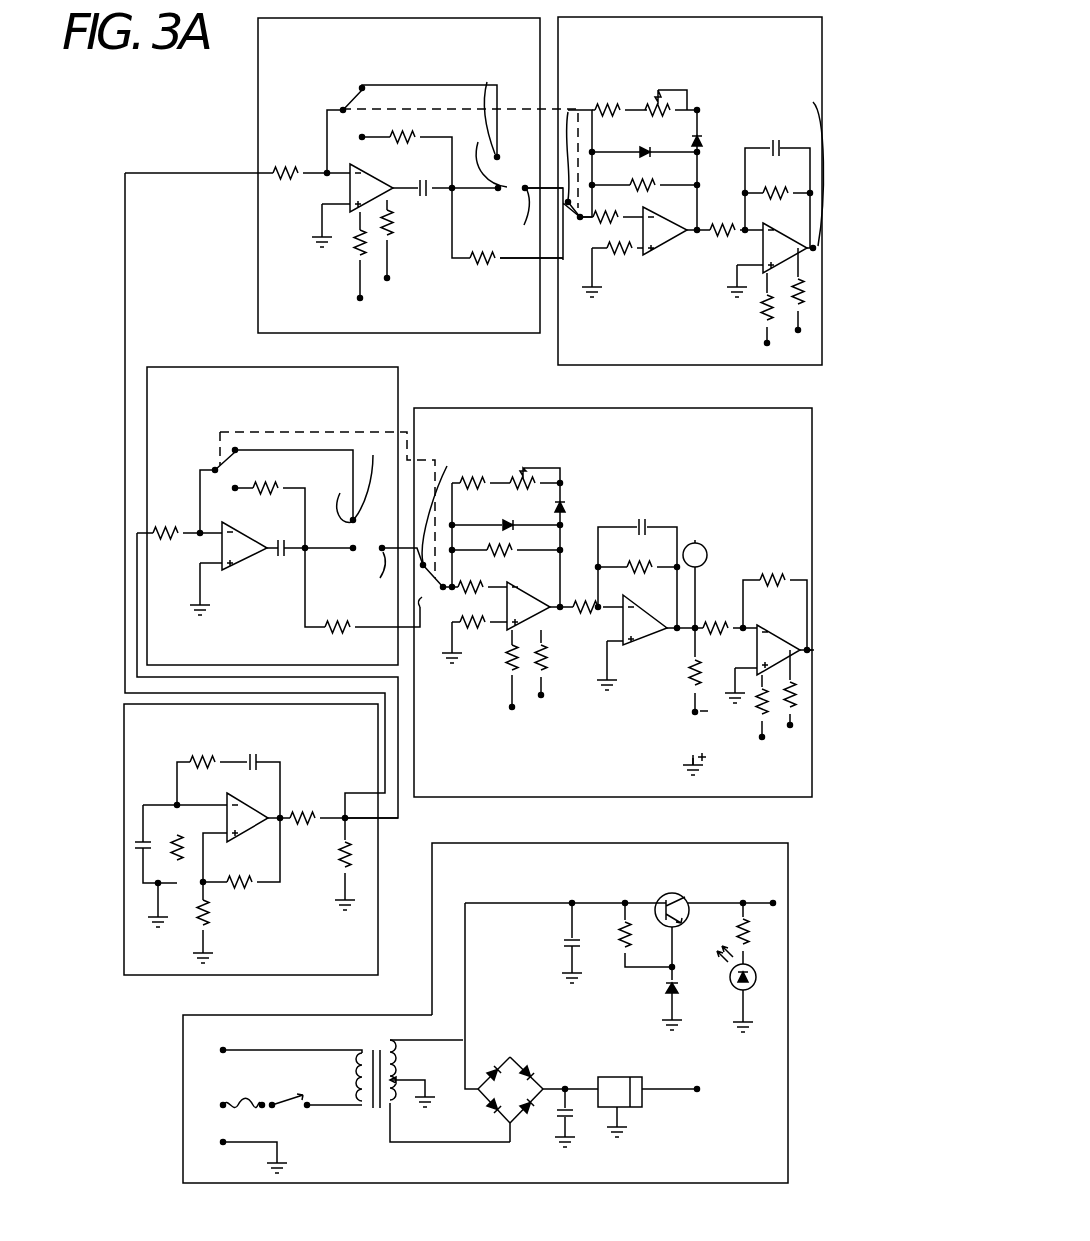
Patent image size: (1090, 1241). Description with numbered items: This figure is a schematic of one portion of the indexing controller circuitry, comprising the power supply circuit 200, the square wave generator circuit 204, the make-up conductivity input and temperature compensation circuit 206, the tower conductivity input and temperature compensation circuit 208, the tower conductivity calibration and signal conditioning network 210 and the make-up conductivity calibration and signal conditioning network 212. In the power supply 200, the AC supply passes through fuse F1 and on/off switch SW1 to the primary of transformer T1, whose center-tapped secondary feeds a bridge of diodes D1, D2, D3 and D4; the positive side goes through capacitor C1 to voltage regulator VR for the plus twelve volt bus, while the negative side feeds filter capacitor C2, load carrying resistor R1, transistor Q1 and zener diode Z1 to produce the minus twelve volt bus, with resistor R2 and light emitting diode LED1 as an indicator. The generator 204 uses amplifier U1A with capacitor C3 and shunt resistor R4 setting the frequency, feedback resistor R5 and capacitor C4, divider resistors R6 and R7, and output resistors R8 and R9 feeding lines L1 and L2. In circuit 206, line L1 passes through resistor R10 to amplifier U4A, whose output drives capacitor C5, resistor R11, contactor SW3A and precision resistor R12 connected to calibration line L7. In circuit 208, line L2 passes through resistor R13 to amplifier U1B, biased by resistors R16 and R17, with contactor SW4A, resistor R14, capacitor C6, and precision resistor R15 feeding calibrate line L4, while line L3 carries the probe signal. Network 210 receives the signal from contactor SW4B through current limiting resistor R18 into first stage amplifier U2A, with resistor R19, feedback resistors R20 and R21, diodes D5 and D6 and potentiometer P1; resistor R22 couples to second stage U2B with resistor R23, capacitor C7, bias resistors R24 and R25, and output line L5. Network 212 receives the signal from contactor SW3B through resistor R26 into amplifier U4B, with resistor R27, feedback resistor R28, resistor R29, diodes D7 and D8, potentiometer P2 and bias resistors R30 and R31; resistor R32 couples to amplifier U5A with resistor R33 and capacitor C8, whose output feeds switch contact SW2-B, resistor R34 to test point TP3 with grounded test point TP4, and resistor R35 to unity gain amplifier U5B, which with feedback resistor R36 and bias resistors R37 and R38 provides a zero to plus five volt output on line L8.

The power supply circuit 200 is at (761, 871).
The square wave generator circuit 204 is at (327, 965).
The make-up conductivity input and temperature compensation circuit 206 is at (257, 660).
The tower conductivity input and temperature compensation circuit 208 is at (493, 331).
The tower conductivity calibration and signal conditioning network 210 is at (677, 354).
The make-up conductivity calibration and signal conditioning network 212 is at (559, 778).
The output line L1 is at (382, 838).
The output line L2 is at (352, 794).
The output line L3 is at (556, 183).
The calibrate input line L4 is at (552, 273).
The output line L5 is at (807, 164).
The calibration input line L7 is at (398, 634).
The output line L8 is at (812, 636).
The load carrying resistor R1 is at (618, 946).
The resistor R2 is at (748, 942).
The resistor R4 is at (169, 840).
The resistor R5 is at (217, 758).
The resistor R6 is at (258, 876).
The resistor R7 is at (204, 932).
The resistor R8 is at (320, 814).
The resistor R9 is at (340, 855).
The resistor R10 is at (183, 520).
The resistor R11 is at (283, 484).
The precision (calibration) resistor R12 is at (332, 617).
The resistor R13 is at (292, 172).
The resistor R14 is at (421, 151).
The precision resistor R15 is at (478, 264).
The bias resistor R16 is at (354, 254).
The bias resistor R17 is at (392, 226).
The current limiting resistor R18 is at (612, 214).
The resistor R19 is at (610, 256).
The feedback resistor R20 is at (645, 185).
The feedback resistor R21 is at (616, 118).
The resistor R22 is at (720, 238).
The feedback resistor R23 is at (781, 180).
The bias resistor R24 is at (766, 306).
The bias resistor R25 is at (786, 302).
The resistor R26 is at (483, 556).
The resistor R27 is at (476, 592).
The feedback resistor R28 is at (505, 553).
The resistor R29 is at (473, 496).
The bias resistor R30 is at (506, 664).
The bias resistor R31 is at (542, 655).
The resistor R32 is at (592, 608).
The resistor R33 is at (634, 569).
The resistor R34 is at (690, 688).
The resistor R35 is at (722, 628).
The feedback resistor R36 is at (780, 580).
The resistor R37 is at (760, 710).
The resistor R38 is at (784, 690).
The capacitor C1 is at (576, 1118).
The filter capacitor C2 is at (564, 940).
The capacitor C3 is at (136, 838).
The capacitor C4 is at (266, 758).
The capacitor C5 is at (280, 562).
The capacitor C6 is at (418, 200).
The capacitor C7 is at (769, 142).
The capacitor C8 is at (638, 524).
The diode D1 is at (492, 1068).
The diode D2 is at (532, 1068).
The diode D3 is at (531, 1113).
The diode D4 is at (486, 1112).
The diode D5 is at (642, 149).
The diode D6 is at (701, 132).
The diode D7 is at (494, 521).
The diode D8 is at (562, 510).
The operational amplifier U1A is at (247, 817).
The inverting unity gain amplifier U1B is at (371, 188).
The first stage operational amplifier U2A is at (665, 231).
The second stage operational amplifier U2B is at (785, 248).
The unity gain operational amplifier U4A is at (244, 546).
The operational amplifier U4B is at (528, 606).
The operational amplifier U5A is at (645, 620).
The unity gain operational amplifier U5B is at (778, 650).
The tower cal/adjust potentiometer P1 is at (688, 93).
The make-up calibrate/adjust potentiometer P2 is at (536, 478).
The on/off switch SW1 is at (274, 1106).
The switch contact SW2-B is at (697, 543).
The moveable contactor SW3A is at (244, 450).
The movable contactor SW3B is at (432, 675).
The movable contactor SW4A is at (362, 150).
The movable contactor SW4B is at (588, 305).
The test point connector TP3 is at (691, 712).
The test point TP4 is at (690, 762).
The transistor Q1 is at (686, 898).
The zener diode Z1 is at (664, 989).
The light emitting diode LED1 is at (756, 988).
The transformer T1 is at (384, 1052).
The fuse F1 is at (242, 1108).
The integrated circuit voltage regulator VR is at (622, 1099).